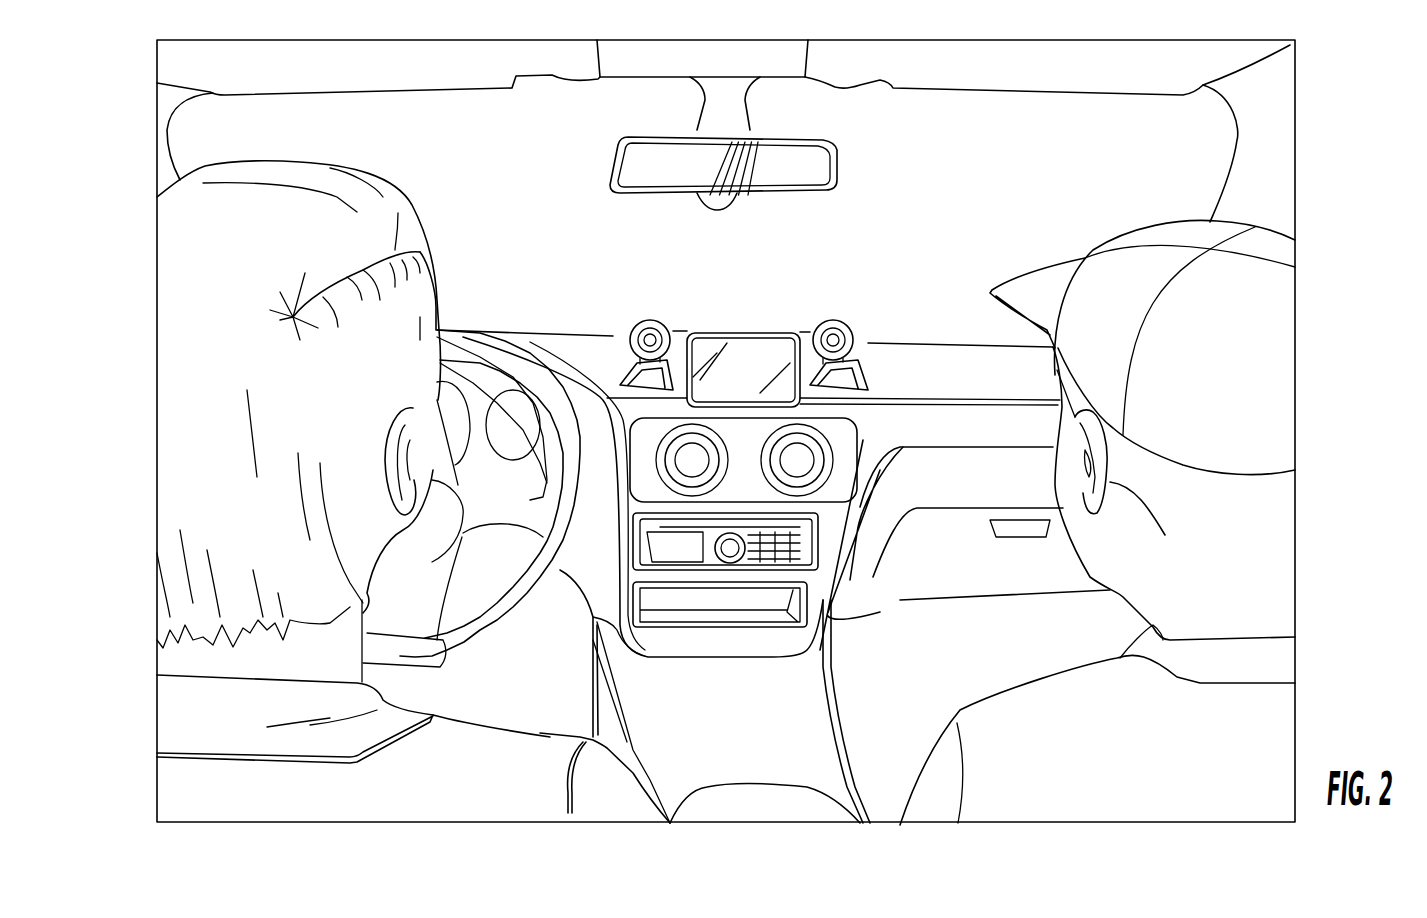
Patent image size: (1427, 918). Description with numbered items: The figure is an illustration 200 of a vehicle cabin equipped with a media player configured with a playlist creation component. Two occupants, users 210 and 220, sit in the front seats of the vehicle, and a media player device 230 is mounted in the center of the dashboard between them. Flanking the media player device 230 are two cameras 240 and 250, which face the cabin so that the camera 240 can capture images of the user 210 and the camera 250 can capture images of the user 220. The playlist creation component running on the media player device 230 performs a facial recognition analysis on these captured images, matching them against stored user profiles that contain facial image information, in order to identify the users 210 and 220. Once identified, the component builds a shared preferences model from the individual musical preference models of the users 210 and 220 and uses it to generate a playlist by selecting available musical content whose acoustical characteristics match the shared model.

The illustration 200 is at (735, 28).
The user 210 is at (420, 230).
The user 220 is at (1137, 228).
The media player device 230 is at (733, 327).
The camera 240 is at (650, 320).
The camera 250 is at (843, 322).